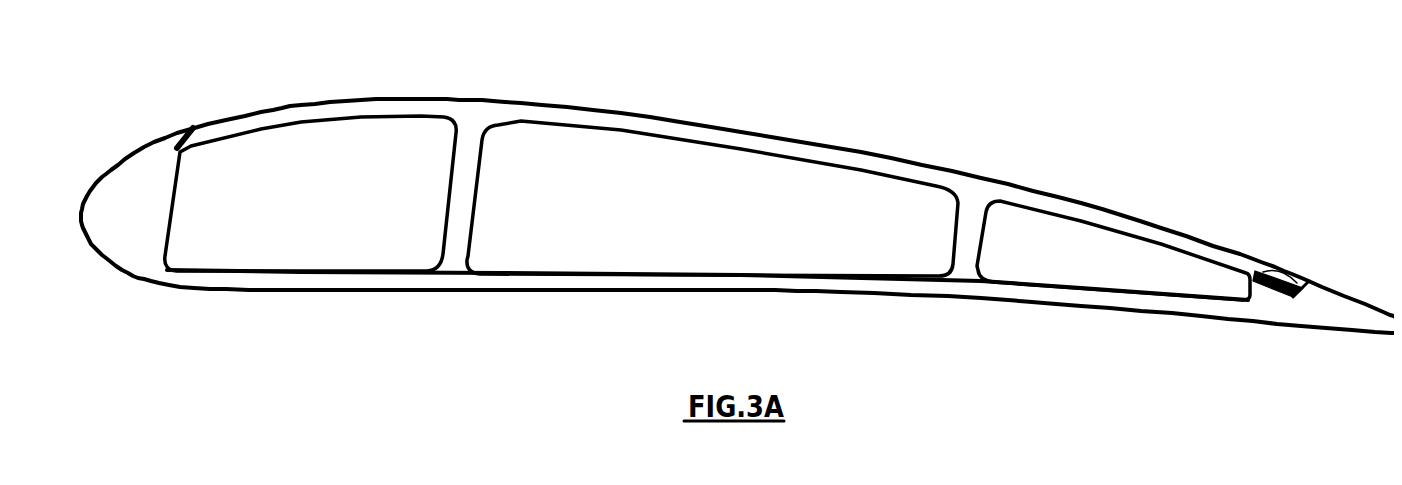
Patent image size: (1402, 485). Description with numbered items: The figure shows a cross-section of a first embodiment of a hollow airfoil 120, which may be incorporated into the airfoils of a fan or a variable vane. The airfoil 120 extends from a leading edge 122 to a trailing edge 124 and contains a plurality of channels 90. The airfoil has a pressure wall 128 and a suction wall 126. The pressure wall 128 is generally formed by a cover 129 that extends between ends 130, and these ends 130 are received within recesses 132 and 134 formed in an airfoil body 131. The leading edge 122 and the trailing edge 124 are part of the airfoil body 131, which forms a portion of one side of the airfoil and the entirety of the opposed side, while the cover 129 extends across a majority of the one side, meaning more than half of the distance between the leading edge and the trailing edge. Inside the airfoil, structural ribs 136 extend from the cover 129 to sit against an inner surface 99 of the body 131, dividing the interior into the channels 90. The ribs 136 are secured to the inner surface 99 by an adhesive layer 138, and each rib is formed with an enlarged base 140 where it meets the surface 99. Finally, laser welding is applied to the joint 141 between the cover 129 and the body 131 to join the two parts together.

The hollow airfoil 120 is at (326, 358).
The leading edge 122 is at (80, 215).
The trailing edge 124 is at (1401, 354).
The suction wall 126 is at (993, 299).
The pressure wall 128 is at (864, 153).
The cover 129 is at (598, 120).
The ends 130 is at (193, 127).
The airfoil body 131 is at (680, 283).
The recess 132 is at (179, 149).
The recess 134 is at (1247, 277).
The structural ribs 136 is at (459, 199).
The adhesive layer 138 is at (480, 271).
The enlarged base 140 is at (443, 262).
The joint 141 is at (188, 128).
The inner surface 99 is at (637, 271).
The channels 90 is at (328, 187).